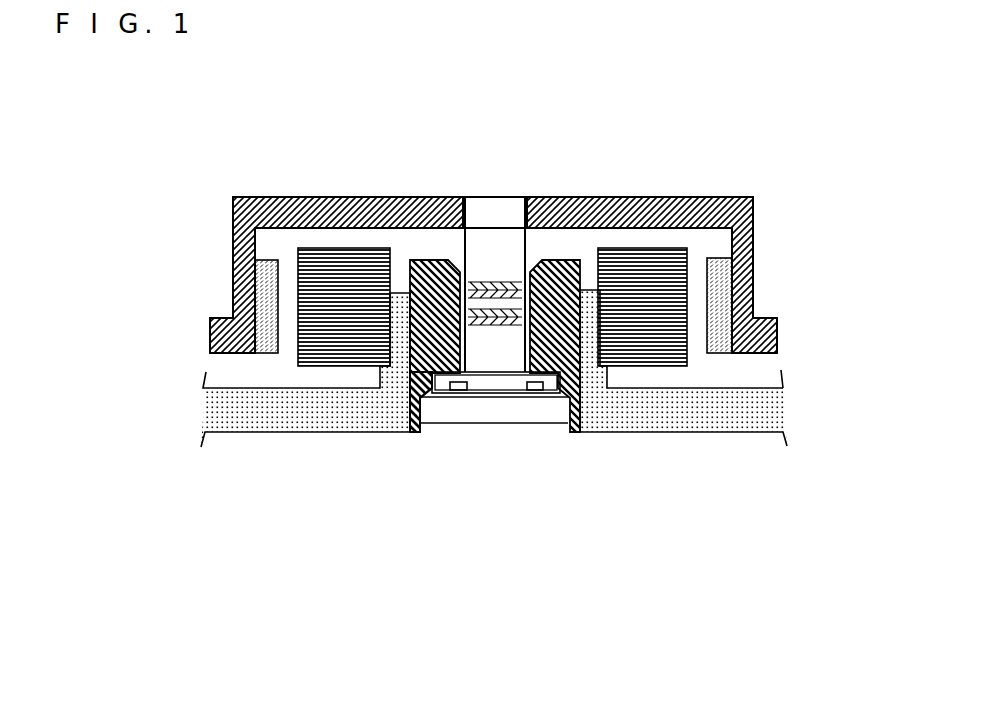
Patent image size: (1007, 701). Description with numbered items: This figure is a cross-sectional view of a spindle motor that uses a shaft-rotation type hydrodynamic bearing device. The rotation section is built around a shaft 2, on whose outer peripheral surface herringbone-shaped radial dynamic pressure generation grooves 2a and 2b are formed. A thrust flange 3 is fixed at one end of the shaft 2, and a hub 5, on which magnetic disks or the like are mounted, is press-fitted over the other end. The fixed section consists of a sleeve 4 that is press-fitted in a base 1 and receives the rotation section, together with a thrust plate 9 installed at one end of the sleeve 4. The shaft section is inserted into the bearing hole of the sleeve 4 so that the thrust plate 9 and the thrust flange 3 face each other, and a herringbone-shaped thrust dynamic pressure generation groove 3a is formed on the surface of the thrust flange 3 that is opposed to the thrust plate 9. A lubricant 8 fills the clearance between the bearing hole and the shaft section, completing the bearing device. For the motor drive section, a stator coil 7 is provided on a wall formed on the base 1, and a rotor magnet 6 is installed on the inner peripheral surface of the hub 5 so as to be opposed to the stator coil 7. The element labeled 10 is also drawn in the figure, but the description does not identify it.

The base 1 is at (672, 417).
The shaft 2 is at (503, 228).
The radial dynamic pressure generation groove 2a is at (495, 280).
The radial dynamic pressure generation groove 2b is at (485, 307).
The thrust flange 3 is at (482, 383).
The thrust dynamic pressure generation groove 3a is at (540, 392).
The sleeve 4 is at (430, 268).
The hub 5 is at (680, 208).
The rotor magnet 6 is at (742, 292).
The stator coil 7 is at (355, 270).
The lubricant 8 is at (412, 398).
The thrust plate 9 is at (500, 417).
The stator core left 10 is at (462, 293).